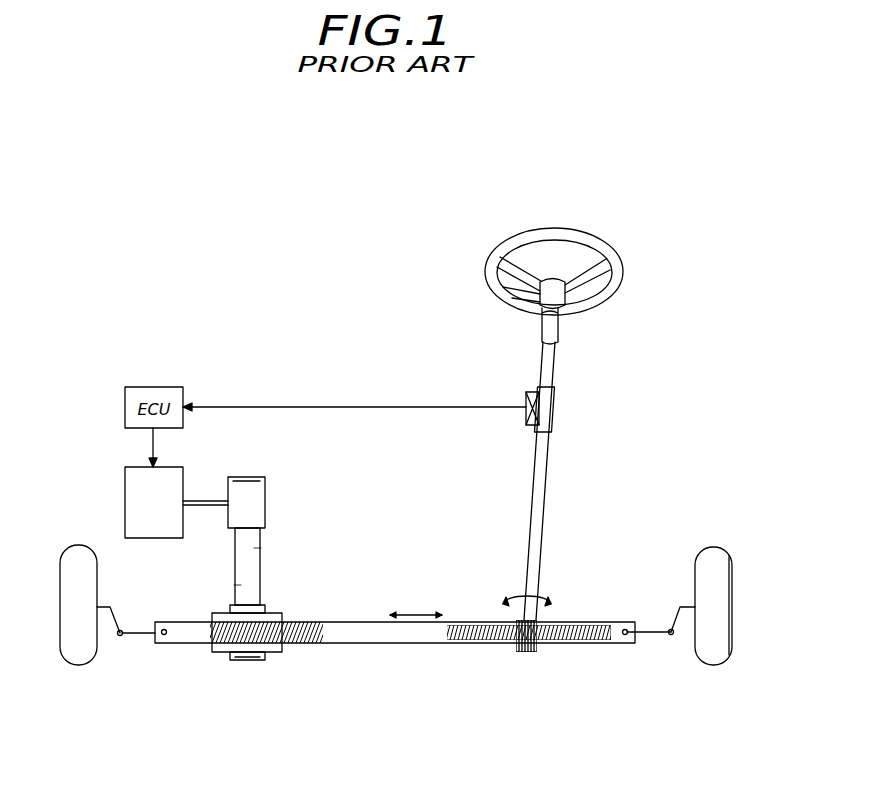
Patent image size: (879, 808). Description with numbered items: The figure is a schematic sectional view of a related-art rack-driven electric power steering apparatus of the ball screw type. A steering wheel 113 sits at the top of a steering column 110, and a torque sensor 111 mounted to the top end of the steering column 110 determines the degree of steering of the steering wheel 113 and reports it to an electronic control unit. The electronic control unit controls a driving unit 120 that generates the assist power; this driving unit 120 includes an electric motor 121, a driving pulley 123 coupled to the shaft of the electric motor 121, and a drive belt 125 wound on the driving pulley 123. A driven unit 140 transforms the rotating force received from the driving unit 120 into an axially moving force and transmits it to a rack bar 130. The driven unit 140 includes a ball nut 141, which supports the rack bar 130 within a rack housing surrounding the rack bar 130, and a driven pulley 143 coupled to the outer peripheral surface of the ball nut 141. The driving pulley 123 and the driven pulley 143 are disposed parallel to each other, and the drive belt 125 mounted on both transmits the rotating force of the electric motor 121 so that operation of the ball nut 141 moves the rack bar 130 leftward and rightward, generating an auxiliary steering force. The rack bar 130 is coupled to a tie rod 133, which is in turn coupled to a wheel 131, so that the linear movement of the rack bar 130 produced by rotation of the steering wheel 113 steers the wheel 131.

The steering column 110 is at (552, 421).
The torque sensor 111 is at (526, 396).
The steering wheel 113 is at (580, 242).
The driving unit 120 is at (181, 516).
The electric motor 121 is at (133, 517).
The driving pulley 123 is at (255, 503).
The drive belt 125 is at (255, 558).
The rack bar 130 is at (340, 628).
The wheel 131 is at (713, 560).
The tie rod 133 is at (655, 629).
The driven unit 140 is at (257, 656).
The ball nut 141 is at (223, 652).
The driven pulley 143 is at (228, 612).